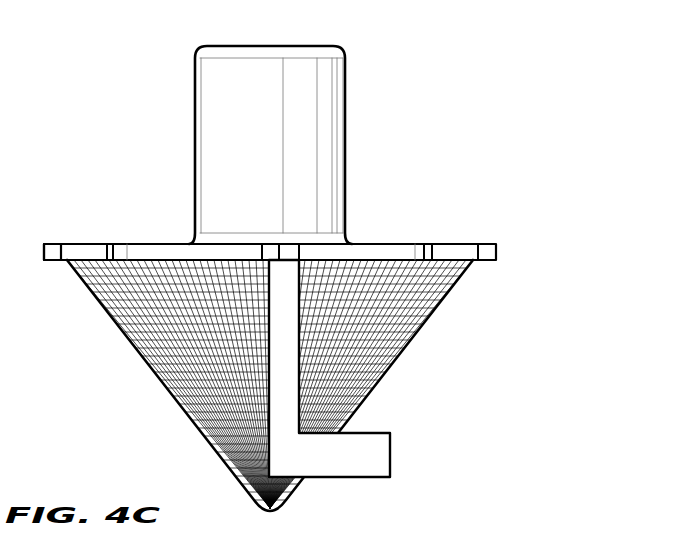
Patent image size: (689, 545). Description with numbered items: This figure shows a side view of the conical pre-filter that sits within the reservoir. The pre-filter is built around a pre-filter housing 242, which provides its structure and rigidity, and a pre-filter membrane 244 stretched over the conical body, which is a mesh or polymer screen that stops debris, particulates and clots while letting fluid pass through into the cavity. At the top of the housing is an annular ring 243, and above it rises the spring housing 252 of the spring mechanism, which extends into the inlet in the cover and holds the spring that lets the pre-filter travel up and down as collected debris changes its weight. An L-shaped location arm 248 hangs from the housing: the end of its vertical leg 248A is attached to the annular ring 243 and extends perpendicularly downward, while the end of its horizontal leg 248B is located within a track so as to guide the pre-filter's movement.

The pre-filter housing 242 is at (497, 251).
The annular ring 243 is at (72, 242).
The pre-filter membrane 244 is at (410, 305).
The location arm 248 is at (290, 388).
The end of vertical leg of the L-shaped location arm 248A is at (283, 293).
The end of horizontal leg of the L-shaped location arm 248B is at (365, 453).
The spring housing 252 is at (221, 80).